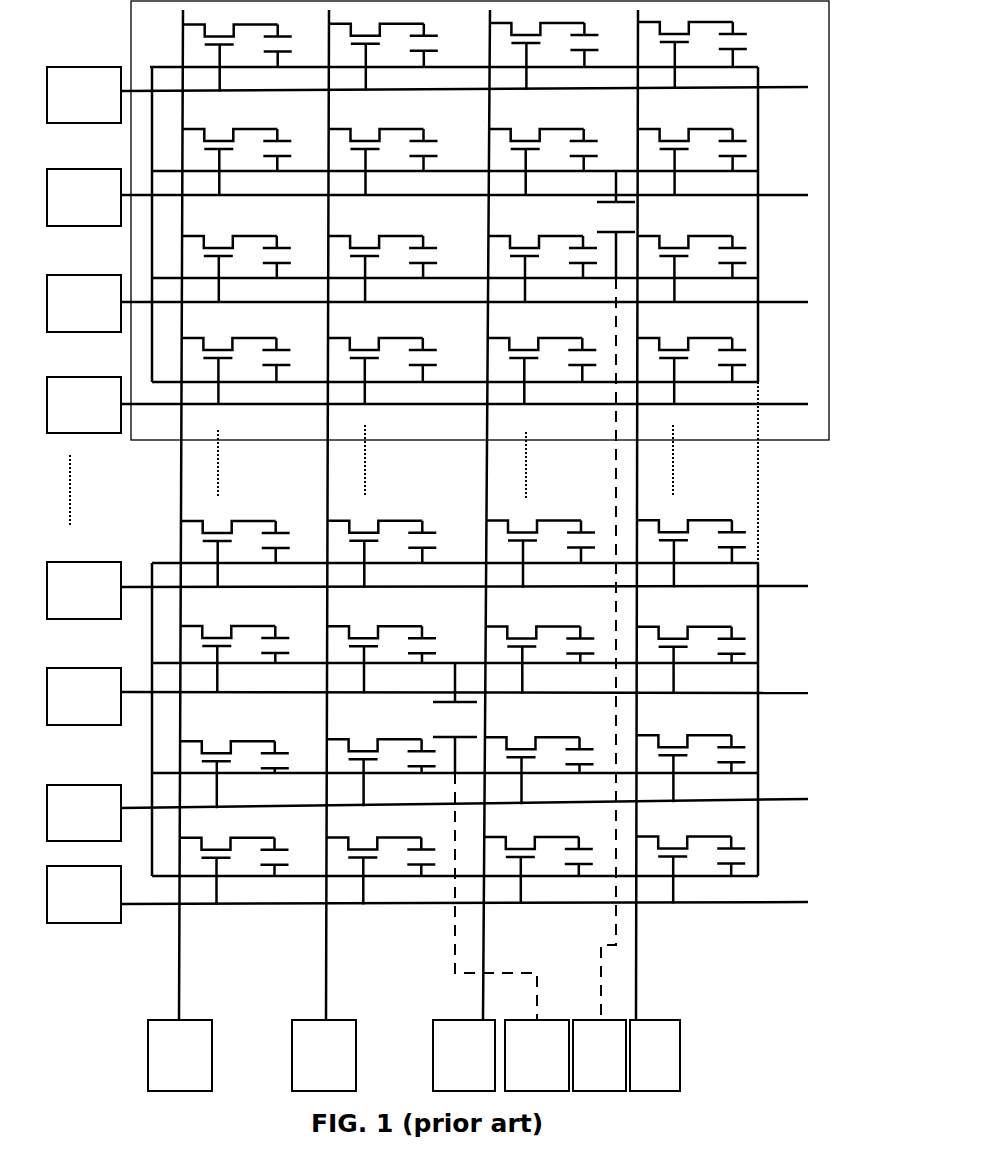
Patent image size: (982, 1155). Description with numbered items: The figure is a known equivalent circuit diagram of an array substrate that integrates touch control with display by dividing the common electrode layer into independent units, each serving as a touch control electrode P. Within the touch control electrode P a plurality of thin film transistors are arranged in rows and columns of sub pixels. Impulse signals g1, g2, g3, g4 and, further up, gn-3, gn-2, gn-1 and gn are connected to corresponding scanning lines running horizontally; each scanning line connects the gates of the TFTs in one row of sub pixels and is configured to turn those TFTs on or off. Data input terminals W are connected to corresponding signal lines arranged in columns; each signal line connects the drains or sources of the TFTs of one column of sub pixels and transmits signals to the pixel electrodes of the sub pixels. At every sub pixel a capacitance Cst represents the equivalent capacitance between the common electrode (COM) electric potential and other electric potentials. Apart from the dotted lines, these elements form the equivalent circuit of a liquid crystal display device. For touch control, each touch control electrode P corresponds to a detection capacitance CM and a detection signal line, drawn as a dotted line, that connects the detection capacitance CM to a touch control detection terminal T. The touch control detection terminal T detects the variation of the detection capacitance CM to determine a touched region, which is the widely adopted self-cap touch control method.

The touch control electrode P is at (817, 441).
The capacitance Cst is at (516, 449).
The detection capacitance CM is at (534, 595).
The impulse signal gn is at (427, 95).
The impulse signal gn-1 is at (427, 197).
The impulse signal gn-2 is at (427, 303).
The impulse signal gn-3 is at (427, 405).
The impulse signal g4 is at (427, 590).
The impulse signal g3 is at (427, 696).
The impulse signal g2 is at (427, 813).
The impulse signal g1 is at (427, 894).
The data input terminal W is at (414, 1055).
The touch control detection terminal T is at (565, 1055).